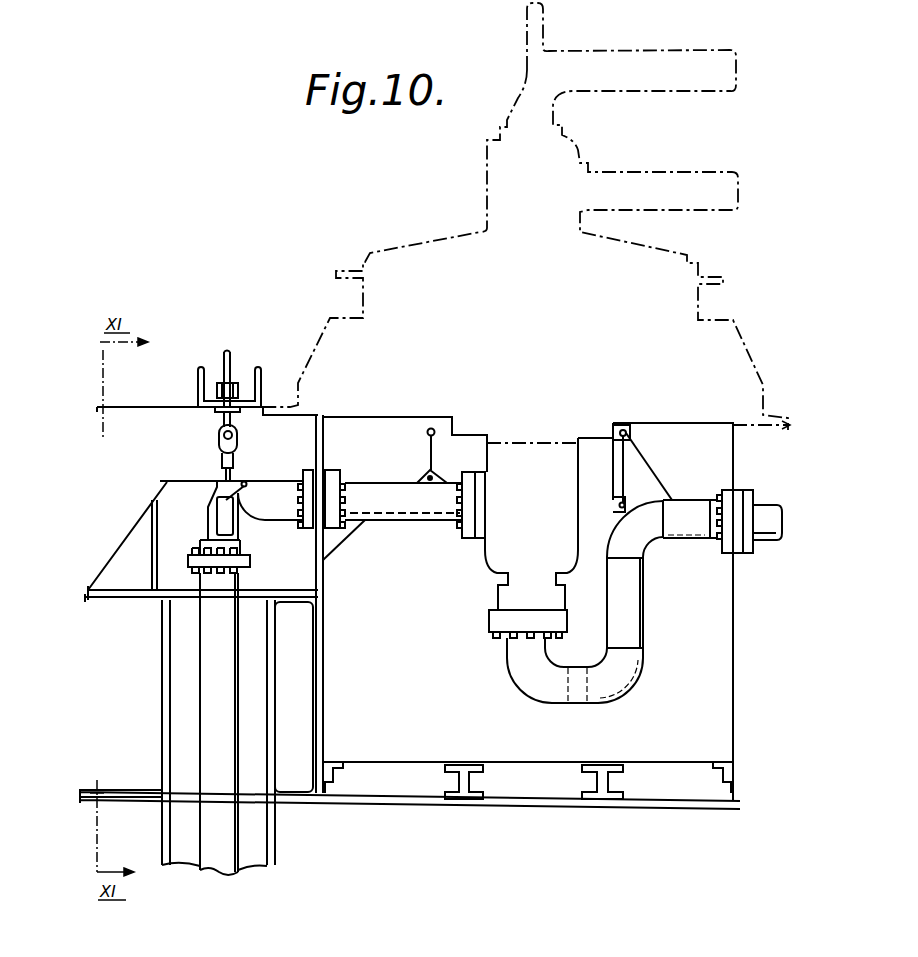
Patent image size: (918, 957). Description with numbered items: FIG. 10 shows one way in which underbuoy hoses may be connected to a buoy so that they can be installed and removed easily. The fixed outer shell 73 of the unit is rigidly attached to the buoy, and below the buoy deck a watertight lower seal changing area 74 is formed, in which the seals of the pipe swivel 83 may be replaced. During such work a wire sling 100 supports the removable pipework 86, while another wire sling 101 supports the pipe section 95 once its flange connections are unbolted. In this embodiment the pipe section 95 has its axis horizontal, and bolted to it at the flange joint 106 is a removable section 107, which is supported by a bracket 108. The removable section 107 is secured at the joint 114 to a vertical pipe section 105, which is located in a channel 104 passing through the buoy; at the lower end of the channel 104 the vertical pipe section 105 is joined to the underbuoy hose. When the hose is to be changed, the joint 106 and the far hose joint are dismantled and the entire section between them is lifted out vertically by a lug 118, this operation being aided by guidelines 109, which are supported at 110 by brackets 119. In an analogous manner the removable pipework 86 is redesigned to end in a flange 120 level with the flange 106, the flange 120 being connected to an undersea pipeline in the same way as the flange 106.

The fixed outer shell 73 is at (578, 492).
The lower seal changing area 74 is at (524, 607).
The pipe swivel 83 is at (490, 630).
The removable pipework 86 is at (645, 607).
The pipe section 95 is at (411, 524).
The wire sling 100 is at (626, 478).
The wire sling 101 is at (400, 483).
The channel 104 is at (182, 740).
The vertical pipe section 105 is at (213, 668).
The flange joint 106 is at (331, 471).
The removable section 107 is at (222, 482).
The bracket 108 is at (127, 536).
The guidelines 109 is at (224, 473).
The guideline support 110 is at (240, 434).
The joint 114 is at (252, 561).
The lug 118 is at (246, 482).
The brackets 119 is at (257, 371).
The flange 120 is at (727, 488).